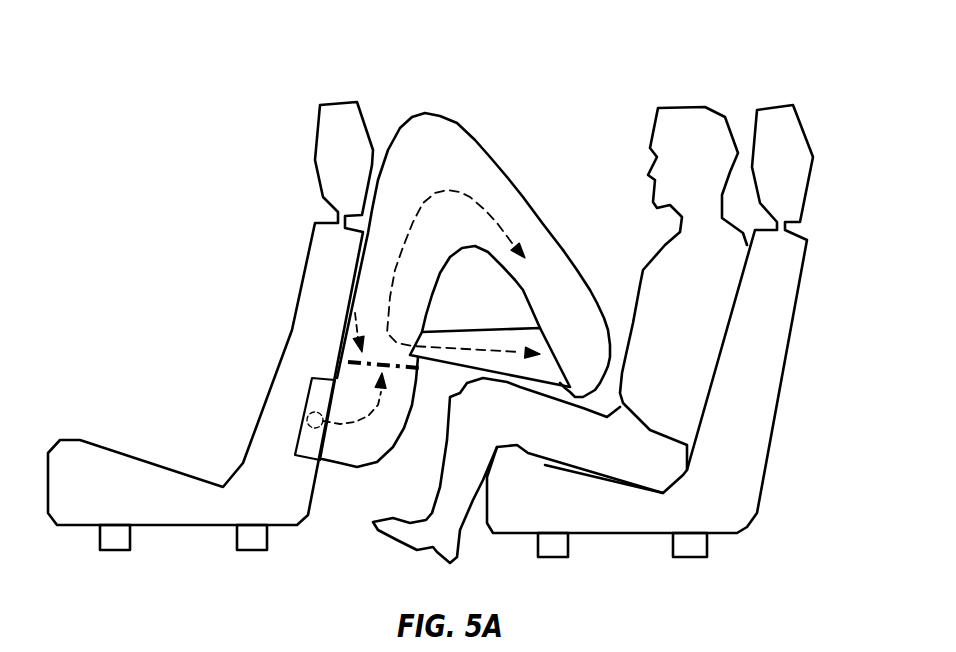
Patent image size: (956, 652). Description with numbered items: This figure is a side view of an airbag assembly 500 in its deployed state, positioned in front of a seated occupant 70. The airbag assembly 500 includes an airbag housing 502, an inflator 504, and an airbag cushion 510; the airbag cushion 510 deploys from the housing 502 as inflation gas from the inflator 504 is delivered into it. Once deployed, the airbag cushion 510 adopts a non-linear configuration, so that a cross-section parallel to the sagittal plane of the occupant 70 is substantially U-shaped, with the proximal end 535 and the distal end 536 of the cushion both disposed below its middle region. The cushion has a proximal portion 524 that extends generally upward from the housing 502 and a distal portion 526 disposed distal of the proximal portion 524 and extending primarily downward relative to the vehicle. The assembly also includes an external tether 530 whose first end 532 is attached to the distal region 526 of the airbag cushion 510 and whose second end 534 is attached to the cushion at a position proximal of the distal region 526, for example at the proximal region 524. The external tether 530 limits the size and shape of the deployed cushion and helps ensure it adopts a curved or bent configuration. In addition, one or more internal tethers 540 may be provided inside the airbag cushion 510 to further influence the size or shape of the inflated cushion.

The airbag assembly 500 is at (440, 298).
The airbag cushion 510 is at (432, 317).
The distal portion 526 is at (536, 184).
The first end 532 is at (558, 348).
The distal end 536 is at (603, 387).
The external tether 530 is at (490, 328).
The second end 534 is at (418, 332).
The internal tether 540 is at (353, 308).
The proximal portion 524 is at (360, 244).
The airbag housing 502 is at (311, 386).
The inflator 504 is at (305, 420).
The proximal end 535 is at (352, 472).
The occupant 70 is at (708, 297).